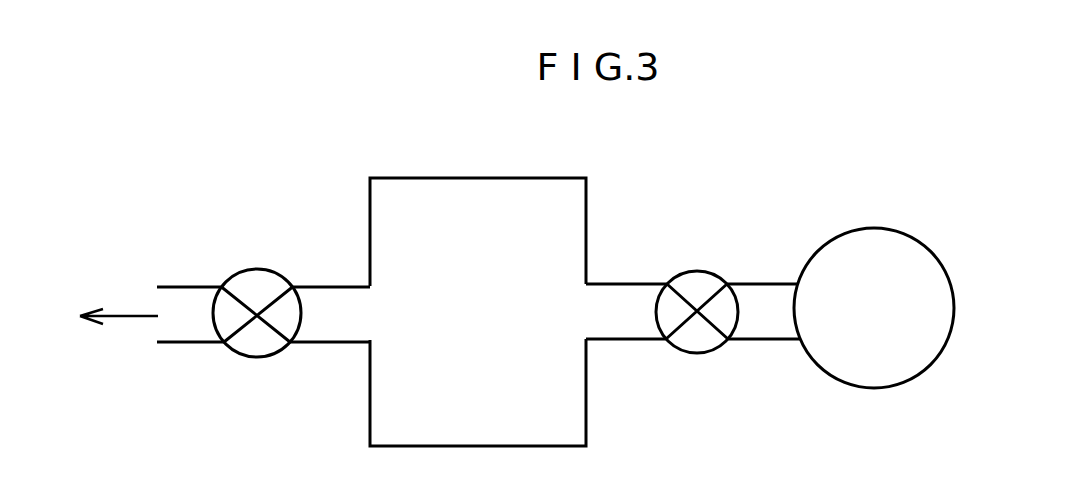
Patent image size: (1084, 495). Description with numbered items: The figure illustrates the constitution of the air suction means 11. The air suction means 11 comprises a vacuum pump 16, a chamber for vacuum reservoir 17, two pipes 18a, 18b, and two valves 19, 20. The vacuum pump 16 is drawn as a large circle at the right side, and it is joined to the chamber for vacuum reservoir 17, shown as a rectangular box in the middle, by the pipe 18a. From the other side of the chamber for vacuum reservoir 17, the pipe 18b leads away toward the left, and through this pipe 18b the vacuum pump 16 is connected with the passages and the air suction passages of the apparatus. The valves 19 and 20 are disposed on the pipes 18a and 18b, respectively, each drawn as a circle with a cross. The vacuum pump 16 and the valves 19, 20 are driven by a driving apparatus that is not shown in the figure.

The air suction means 11 is at (645, 194).
The vacuum pump 16 is at (891, 325).
The chamber for vacuum reservoir 17 is at (493, 330).
The pipe 18a is at (633, 328).
The pipe 18b is at (320, 335).
The valve 19 is at (697, 282).
The valve 20 is at (257, 282).